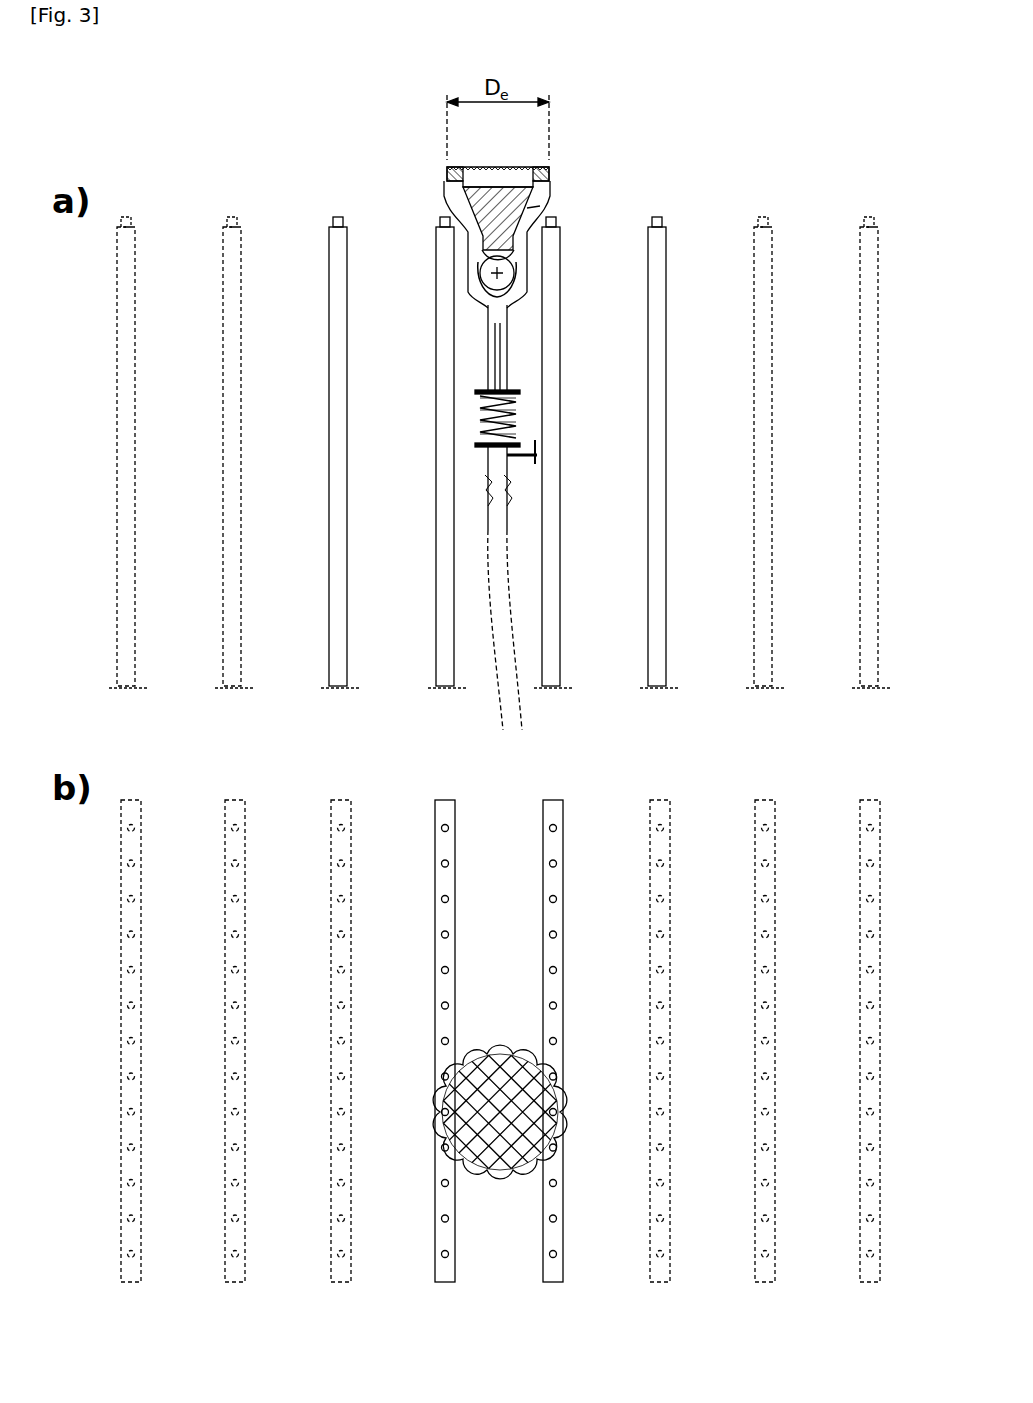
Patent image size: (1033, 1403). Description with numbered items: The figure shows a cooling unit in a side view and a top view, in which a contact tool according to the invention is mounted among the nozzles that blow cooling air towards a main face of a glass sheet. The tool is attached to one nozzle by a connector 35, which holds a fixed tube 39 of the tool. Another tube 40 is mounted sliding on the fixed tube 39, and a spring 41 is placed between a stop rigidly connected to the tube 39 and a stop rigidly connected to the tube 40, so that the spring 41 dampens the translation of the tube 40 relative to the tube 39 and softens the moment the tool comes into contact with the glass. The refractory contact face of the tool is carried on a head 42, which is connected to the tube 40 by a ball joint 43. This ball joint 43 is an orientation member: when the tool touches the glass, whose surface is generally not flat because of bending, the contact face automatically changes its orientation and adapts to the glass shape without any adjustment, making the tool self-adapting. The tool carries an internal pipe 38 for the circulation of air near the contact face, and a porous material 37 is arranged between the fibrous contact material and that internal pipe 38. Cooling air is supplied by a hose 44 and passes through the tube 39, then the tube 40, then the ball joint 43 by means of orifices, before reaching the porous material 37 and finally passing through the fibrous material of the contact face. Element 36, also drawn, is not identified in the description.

The connector 35 is at (529, 472).
The top plate 36 is at (470, 180).
The porous material 37 is at (447, 175).
The internal pipe 38 is at (550, 205).
The fixed tube 39 is at (512, 420).
The tube 40 is at (503, 365).
The spring 41 is at (485, 416).
The head 42 is at (562, 195).
The ball joint 43 is at (530, 300).
The hose 44 is at (505, 704).